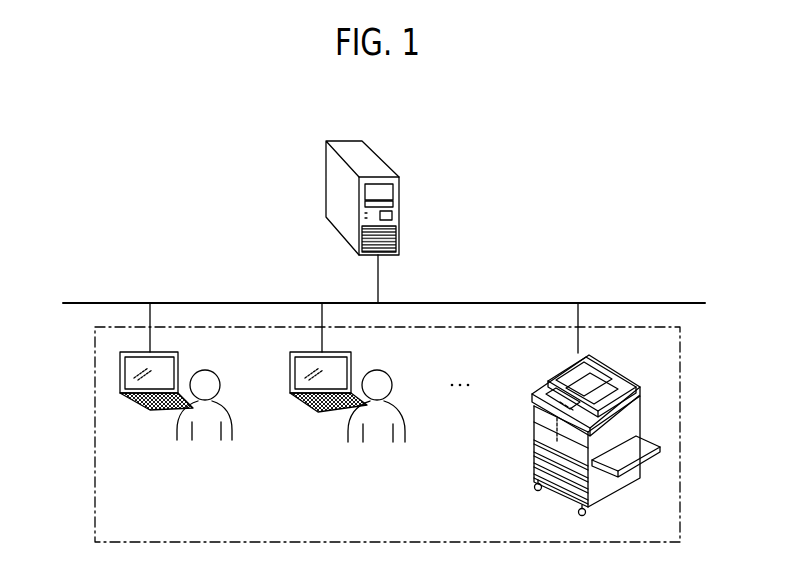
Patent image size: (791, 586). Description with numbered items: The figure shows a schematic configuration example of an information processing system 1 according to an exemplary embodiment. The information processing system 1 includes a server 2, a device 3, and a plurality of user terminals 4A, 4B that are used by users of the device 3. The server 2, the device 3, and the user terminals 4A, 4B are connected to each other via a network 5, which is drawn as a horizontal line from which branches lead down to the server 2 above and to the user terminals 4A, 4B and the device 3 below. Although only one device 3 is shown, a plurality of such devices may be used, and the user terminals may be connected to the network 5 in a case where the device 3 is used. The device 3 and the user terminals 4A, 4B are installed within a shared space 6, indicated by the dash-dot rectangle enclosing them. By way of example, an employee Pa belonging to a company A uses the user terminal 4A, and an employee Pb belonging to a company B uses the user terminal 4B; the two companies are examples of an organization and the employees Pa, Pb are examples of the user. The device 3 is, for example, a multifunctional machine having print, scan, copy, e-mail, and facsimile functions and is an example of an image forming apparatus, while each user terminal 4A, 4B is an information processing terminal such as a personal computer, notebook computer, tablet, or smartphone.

The information processing system 1 is at (582, 137).
The server 2 is at (340, 140).
The device 3 is at (640, 418).
The user terminal 4A is at (118, 372).
The user terminal 4B is at (290, 368).
The network 5 is at (593, 303).
The shared space 6 is at (680, 498).
The employee Pa is at (203, 427).
The employee Pb is at (378, 428).